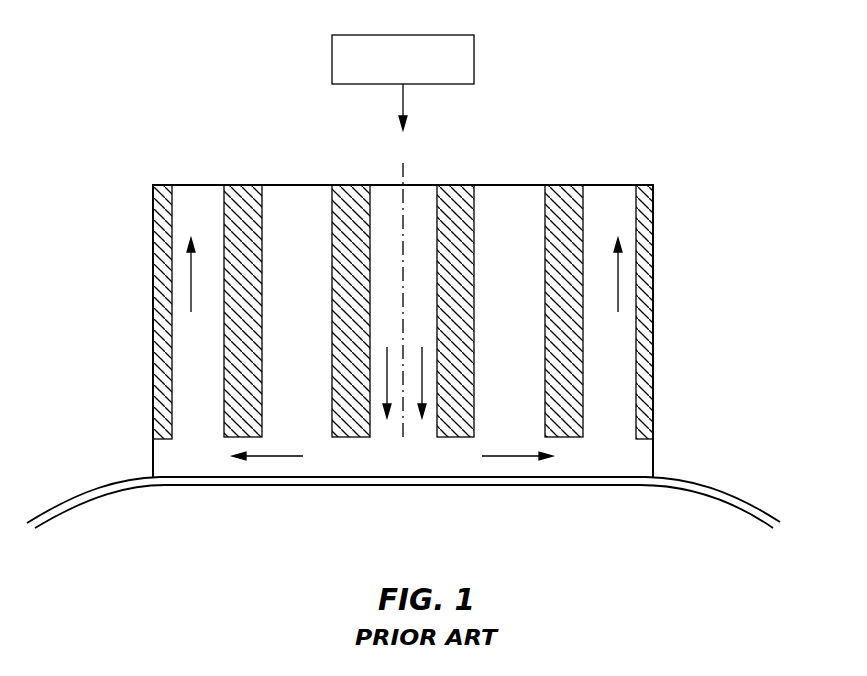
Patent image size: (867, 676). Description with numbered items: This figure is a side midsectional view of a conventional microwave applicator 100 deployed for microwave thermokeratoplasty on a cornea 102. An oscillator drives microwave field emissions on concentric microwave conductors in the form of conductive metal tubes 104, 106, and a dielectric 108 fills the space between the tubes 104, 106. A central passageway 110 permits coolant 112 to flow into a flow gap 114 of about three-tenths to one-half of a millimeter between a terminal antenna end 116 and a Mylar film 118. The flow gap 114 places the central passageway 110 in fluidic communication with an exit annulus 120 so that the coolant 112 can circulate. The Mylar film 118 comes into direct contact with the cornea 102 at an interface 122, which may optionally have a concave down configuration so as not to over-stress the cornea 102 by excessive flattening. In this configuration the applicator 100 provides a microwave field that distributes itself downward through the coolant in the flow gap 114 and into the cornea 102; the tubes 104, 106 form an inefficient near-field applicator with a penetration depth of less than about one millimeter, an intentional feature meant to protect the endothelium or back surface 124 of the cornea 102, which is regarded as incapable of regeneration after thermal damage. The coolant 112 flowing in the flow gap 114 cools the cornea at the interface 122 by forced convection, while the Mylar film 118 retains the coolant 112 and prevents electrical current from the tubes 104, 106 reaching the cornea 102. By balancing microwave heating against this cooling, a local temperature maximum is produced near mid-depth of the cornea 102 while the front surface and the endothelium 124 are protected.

The microwave applicator 100 is at (110, 138).
The cornea 102 is at (406, 489).
The conductive metal tube 104 is at (252, 185).
The conductive metal tube 106 is at (463, 185).
The dielectric 108 is at (308, 185).
The central passageway 110 is at (423, 185).
The coolant 112 is at (474, 53).
The flow gap 114 is at (433, 456).
The terminal antenna end 116 is at (573, 437).
The Mylar film 118 is at (210, 473).
The exit annulus 120 is at (615, 192).
The interface 122 is at (268, 477).
The endothelium 124 is at (337, 485).